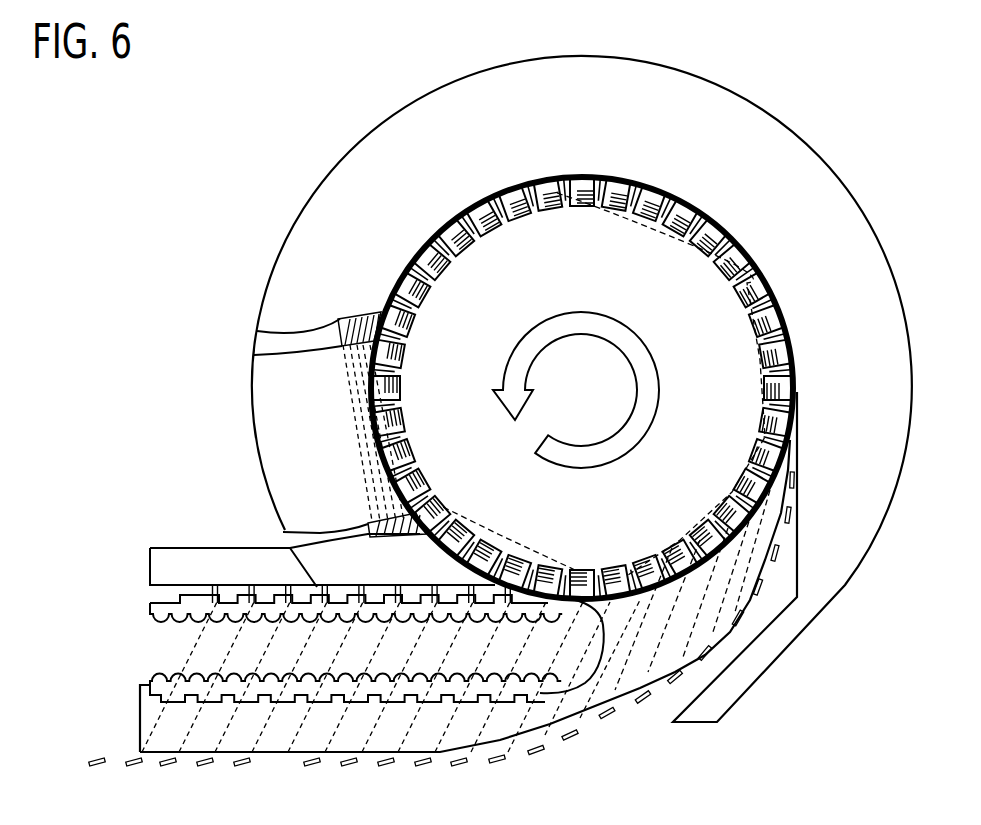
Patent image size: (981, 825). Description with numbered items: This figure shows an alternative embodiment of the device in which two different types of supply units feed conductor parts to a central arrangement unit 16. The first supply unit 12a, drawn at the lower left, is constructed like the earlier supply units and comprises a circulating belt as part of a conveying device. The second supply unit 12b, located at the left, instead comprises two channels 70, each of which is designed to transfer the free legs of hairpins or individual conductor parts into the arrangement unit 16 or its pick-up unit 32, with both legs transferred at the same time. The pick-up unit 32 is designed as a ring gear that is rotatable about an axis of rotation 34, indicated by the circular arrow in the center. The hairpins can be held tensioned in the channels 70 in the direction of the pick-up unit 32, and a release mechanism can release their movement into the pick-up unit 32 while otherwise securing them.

The first supply unit 12a is at (131, 643).
The second supply unit 12b is at (200, 428).
The arrangement unit 16 is at (733, 313).
The pick-up unit 32 is at (750, 392).
The axis of rotation 34 is at (617, 378).
The channels 70 is at (242, 342).